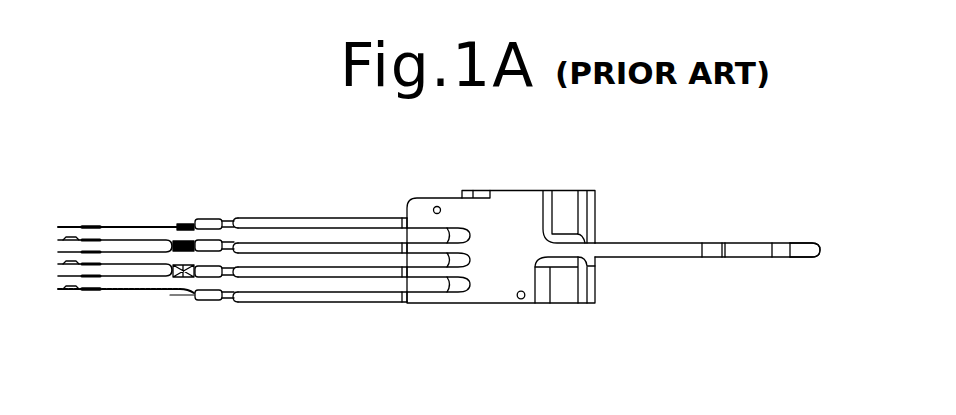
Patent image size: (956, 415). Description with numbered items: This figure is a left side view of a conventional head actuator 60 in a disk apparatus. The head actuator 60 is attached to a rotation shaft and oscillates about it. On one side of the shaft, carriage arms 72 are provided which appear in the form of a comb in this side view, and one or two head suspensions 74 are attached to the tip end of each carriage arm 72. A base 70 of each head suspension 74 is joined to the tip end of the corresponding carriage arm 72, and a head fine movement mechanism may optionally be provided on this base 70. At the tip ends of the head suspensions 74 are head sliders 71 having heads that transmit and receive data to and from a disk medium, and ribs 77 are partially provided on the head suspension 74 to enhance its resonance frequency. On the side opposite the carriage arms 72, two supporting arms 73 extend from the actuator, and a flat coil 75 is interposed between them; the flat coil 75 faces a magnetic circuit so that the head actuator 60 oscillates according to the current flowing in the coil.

The head actuator 60 is at (532, 310).
The base 70 is at (192, 306).
The head slider 71 is at (73, 226).
The carriage arm 72 is at (337, 303).
The supporting arm 73 is at (667, 257).
The head suspension 74 is at (123, 293).
The flat coil 75 is at (805, 257).
The rib 77 is at (160, 225).